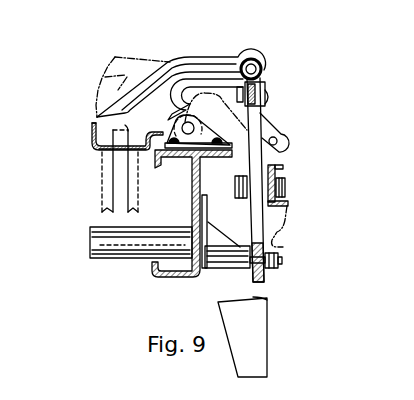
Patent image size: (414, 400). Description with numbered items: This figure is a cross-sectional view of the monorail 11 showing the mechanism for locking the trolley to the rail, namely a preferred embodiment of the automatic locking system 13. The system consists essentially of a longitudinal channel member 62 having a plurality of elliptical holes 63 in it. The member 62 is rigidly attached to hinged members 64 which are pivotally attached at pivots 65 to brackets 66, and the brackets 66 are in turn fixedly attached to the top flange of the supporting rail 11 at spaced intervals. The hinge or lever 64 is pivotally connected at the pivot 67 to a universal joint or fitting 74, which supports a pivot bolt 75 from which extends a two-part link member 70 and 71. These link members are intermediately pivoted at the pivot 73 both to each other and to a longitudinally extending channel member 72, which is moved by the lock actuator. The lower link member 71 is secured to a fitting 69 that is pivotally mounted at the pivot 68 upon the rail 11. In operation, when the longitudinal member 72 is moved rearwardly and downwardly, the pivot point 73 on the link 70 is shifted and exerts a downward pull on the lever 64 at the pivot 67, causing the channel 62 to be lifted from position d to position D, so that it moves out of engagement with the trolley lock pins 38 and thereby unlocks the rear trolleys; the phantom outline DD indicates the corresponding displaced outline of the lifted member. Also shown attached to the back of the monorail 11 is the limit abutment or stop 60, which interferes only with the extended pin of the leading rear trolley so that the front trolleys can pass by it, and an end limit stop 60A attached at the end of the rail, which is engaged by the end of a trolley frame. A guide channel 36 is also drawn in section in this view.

The monorail 11 is at (153, 281).
The automatic locking system 13 is at (170, 50).
The guide channel 36 is at (103, 186).
The trolley lock pins 38 is at (98, 120).
The limit abutment or stop 60 is at (270, 337).
The end limit stop 60A is at (97, 240).
The longitudinal channel member 62 is at (90, 133).
The elliptical holes 63 is at (103, 147).
The hinged member 64 is at (217, 58).
The pivot 65 is at (192, 125).
The bracket 66 is at (207, 138).
The pivot 67 is at (258, 62).
The pivot 68 is at (280, 263).
The fitting 69 is at (222, 268).
The link member 70 is at (277, 157).
The lower link member 71 is at (252, 222).
The longitudinally extending channel member 72 is at (283, 168).
The pivot 73 is at (288, 187).
The universal joint or fitting 74 is at (262, 82).
The pivot bolt 75 is at (268, 97).
The lifted position of channel D is at (95, 110).
The door outline DD is at (115, 57).
The lowered position of channel d is at (90, 124).